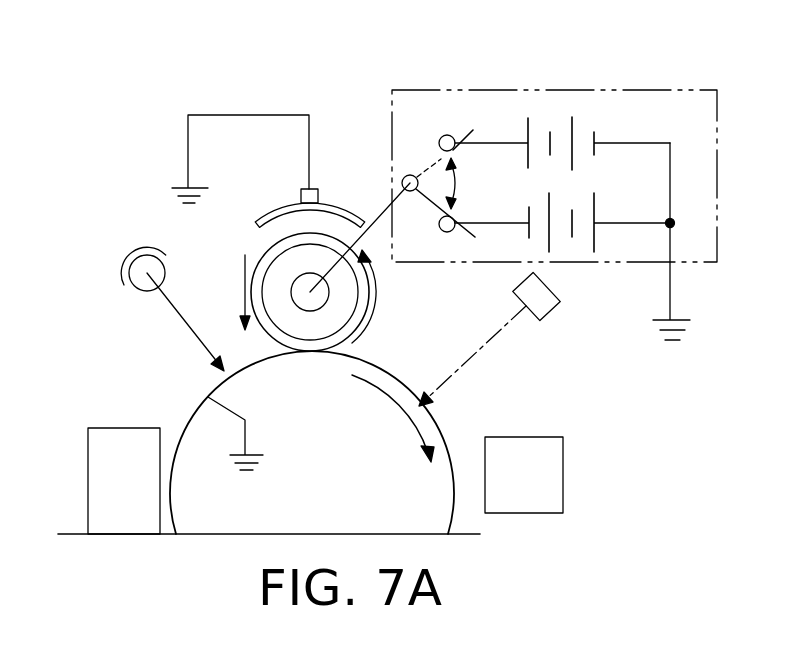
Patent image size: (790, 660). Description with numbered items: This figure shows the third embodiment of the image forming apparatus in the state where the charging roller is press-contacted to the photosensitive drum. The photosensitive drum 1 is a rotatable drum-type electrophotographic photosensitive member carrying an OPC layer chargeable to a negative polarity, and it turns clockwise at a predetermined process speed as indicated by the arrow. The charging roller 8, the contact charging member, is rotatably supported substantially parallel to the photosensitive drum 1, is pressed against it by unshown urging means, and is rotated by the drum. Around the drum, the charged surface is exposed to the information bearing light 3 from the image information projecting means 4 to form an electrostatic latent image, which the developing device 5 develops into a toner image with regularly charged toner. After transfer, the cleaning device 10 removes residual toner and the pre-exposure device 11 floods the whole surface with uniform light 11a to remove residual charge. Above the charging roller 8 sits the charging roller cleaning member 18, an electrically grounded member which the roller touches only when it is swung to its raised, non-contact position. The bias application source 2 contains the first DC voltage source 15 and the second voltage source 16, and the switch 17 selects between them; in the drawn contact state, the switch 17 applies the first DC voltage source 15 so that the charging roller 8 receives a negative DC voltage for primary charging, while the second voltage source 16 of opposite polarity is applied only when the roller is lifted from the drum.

The photosensitive drum 1 is at (392, 373).
The bias application source 2 is at (653, 87).
The information bearing light 3 is at (493, 338).
The image information projecting means 4 is at (548, 320).
The developing device 5 is at (557, 468).
The charging roller 8 is at (278, 268).
The cleaning device 10 is at (102, 467).
The pre-exposure device 11 is at (133, 287).
The uniform light 11a is at (172, 308).
The first DC voltage source 15 is at (582, 247).
The second voltage source 16 is at (562, 110).
The switch 17 is at (433, 180).
The charging roller cleaning member 18 is at (280, 205).